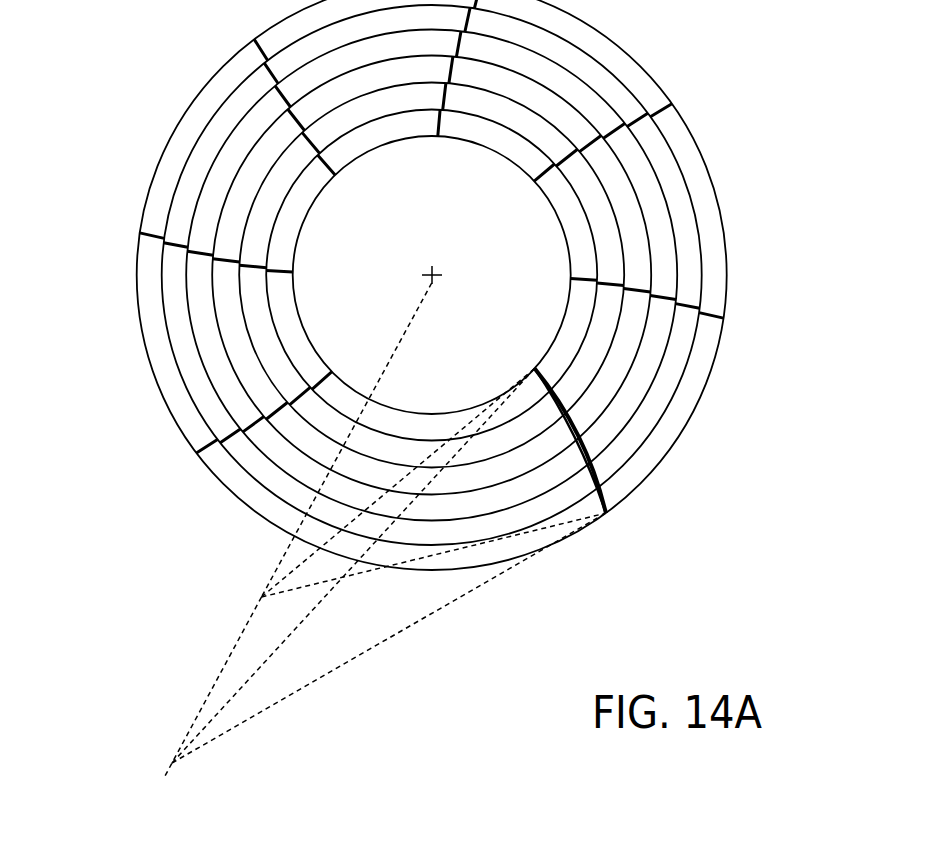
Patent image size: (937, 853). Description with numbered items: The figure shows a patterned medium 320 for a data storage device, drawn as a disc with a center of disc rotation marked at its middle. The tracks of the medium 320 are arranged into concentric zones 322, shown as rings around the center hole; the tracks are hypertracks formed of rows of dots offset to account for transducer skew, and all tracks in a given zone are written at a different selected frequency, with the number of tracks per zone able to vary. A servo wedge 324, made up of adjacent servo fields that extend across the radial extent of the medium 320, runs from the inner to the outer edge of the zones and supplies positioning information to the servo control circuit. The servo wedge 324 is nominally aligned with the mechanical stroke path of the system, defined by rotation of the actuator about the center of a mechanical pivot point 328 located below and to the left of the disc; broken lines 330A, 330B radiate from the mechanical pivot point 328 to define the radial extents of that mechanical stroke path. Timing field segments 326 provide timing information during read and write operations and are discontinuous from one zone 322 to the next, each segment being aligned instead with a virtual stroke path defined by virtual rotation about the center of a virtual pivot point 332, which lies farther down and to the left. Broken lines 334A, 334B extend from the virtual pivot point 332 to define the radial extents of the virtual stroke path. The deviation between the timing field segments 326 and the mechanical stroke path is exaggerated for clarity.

The patterned medium 320 is at (479, 285).
The concentric zones 322 is at (703, 203).
The servo wedge 324 is at (580, 418).
The timing field segments 326 is at (593, 490).
The mechanical pivot point 328 is at (240, 604).
The broken line 330A is at (432, 557).
The broken line 330B is at (298, 563).
The virtual pivot point 332 is at (200, 762).
The broken line 334A is at (358, 652).
The broken line 334B is at (312, 608).